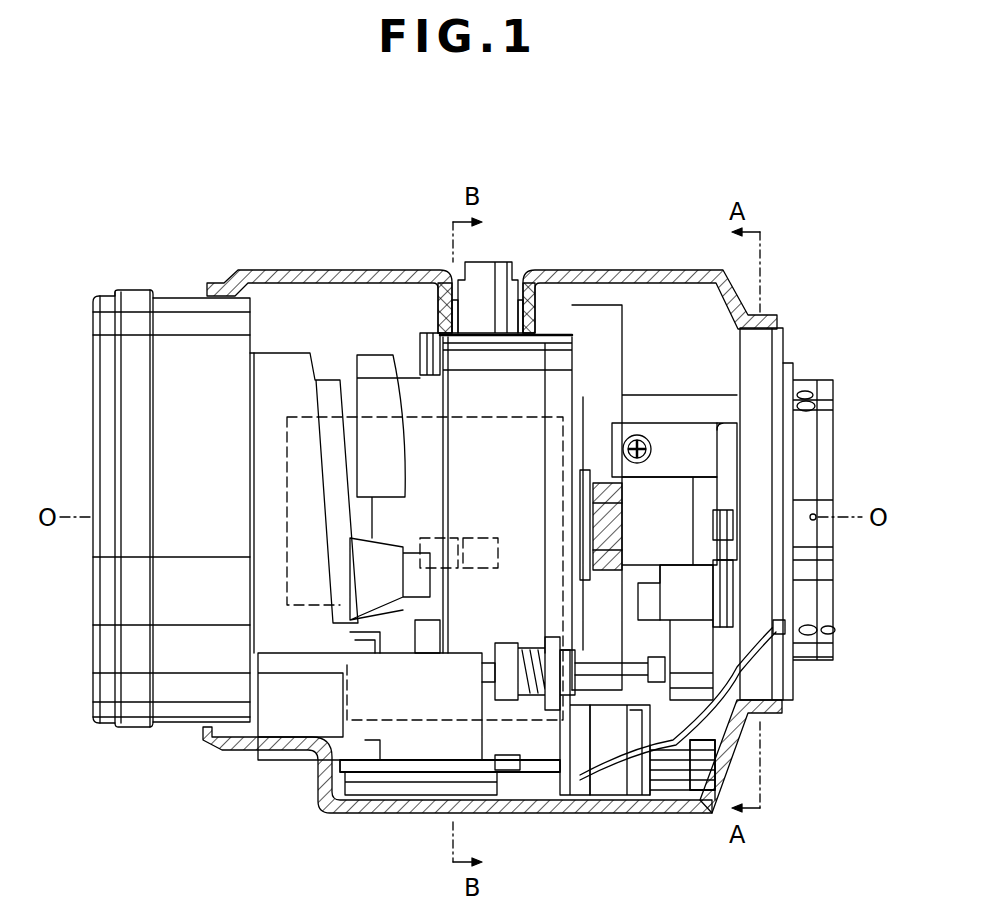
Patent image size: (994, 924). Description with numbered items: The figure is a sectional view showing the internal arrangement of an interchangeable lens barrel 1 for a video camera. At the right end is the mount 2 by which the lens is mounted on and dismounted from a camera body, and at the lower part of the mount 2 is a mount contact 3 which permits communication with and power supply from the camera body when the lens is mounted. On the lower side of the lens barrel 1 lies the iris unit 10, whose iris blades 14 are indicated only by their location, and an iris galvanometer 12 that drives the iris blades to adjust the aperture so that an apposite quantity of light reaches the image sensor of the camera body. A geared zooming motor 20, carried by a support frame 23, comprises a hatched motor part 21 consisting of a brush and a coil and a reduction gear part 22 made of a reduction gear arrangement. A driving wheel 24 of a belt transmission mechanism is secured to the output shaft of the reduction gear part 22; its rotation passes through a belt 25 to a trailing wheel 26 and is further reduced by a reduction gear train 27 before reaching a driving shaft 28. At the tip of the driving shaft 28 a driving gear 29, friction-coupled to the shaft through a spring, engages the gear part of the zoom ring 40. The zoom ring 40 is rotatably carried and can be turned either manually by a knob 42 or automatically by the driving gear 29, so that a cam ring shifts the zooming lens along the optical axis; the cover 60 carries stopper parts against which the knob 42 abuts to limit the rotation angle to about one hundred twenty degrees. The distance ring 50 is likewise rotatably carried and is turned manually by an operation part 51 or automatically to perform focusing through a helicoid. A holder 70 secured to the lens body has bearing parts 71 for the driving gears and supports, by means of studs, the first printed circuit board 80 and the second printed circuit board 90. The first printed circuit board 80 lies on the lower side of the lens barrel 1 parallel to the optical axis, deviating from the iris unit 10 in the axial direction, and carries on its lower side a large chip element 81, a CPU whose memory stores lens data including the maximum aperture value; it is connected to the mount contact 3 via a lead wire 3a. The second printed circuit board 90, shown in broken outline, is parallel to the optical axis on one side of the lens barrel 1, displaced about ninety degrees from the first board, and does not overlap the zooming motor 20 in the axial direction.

The interchangeable lens barrel 1 is at (152, 742).
The mount 2 is at (825, 415).
The mount contact 3 is at (838, 632).
The lead wire 3a is at (680, 745).
The iris unit 10 is at (620, 785).
The iris galvanometer (IG meter) 12 is at (690, 740).
The iris blades 14 is at (590, 725).
The zooming motor 20 is at (665, 490).
The motor part 21 is at (592, 493).
The reduction gear part 22 is at (672, 520).
The support frame 23 is at (700, 445).
The driving wheel 24 is at (735, 520).
The belt 25 is at (730, 548).
The trailing wheel 26 is at (730, 585).
The reduction gear train 27 is at (700, 672).
The driving shaft 28 is at (610, 668).
The driving gear 29 is at (505, 655).
The zoom ring 40 is at (490, 360).
The knob 42 is at (470, 310).
The distance ring 50 is at (268, 362).
The operation part 51 is at (134, 350).
The cover 60 is at (336, 282).
The holder 70 is at (384, 682).
The bearing parts 71 is at (480, 665).
The first printed circuit board 80 is at (540, 765).
The large chip element 81 is at (500, 785).
The second printed circuit board 90 is at (287, 432).